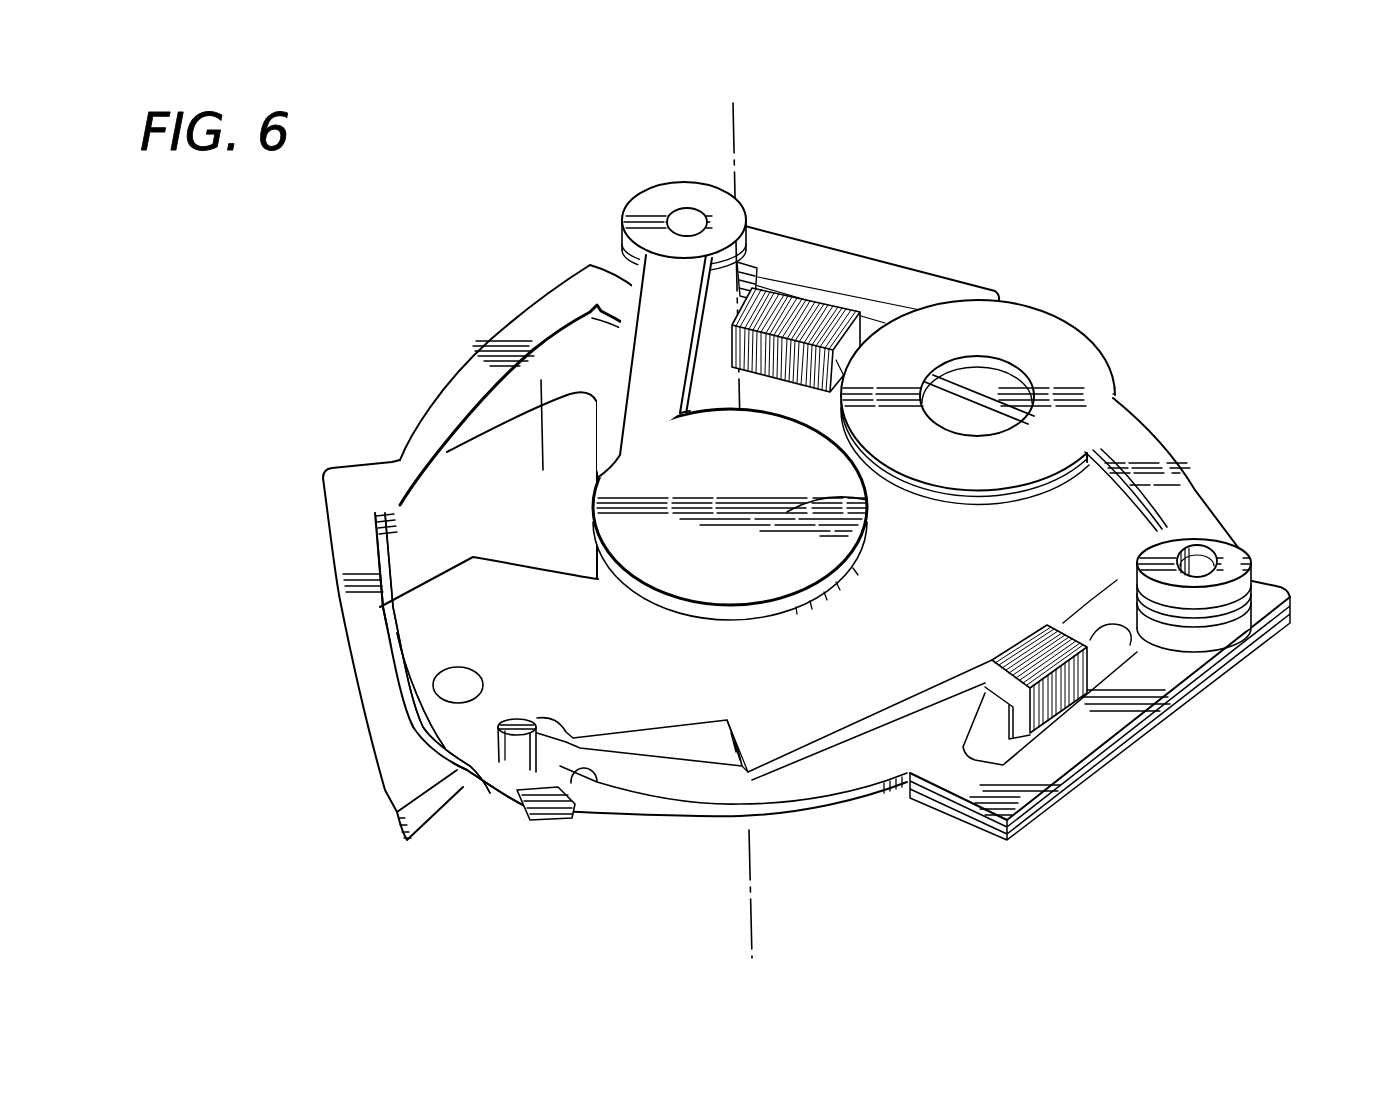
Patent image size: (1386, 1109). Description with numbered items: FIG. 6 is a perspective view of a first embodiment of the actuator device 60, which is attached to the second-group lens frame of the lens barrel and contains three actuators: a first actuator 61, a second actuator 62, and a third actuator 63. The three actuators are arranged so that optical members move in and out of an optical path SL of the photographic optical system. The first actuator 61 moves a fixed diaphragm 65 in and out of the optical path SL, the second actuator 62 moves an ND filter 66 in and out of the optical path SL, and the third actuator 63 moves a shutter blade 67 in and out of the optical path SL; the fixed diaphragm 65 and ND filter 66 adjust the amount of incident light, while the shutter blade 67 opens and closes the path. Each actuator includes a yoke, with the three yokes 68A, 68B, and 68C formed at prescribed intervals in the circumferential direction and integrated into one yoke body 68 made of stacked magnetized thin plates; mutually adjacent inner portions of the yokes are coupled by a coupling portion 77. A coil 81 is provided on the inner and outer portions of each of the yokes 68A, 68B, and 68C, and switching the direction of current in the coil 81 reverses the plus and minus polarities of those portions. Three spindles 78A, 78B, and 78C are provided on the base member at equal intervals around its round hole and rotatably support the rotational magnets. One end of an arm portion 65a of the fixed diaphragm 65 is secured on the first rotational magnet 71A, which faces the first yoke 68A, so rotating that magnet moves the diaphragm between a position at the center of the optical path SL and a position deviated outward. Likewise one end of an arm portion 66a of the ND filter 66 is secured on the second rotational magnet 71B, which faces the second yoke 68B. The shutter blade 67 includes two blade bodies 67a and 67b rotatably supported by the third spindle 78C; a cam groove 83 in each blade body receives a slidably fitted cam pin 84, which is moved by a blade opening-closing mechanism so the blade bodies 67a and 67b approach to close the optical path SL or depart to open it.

The actuator device 60 is at (370, 284).
The first actuator 61 is at (1192, 427).
The second actuator 62 is at (572, 248).
The third actuator 63 is at (508, 822).
The fixed diaphragm 65 is at (1098, 378).
The arm portion of the fixed diaphragm 65a is at (1183, 476).
The ND filter 66 is at (867, 512).
The arm portion of the ND filter 66a is at (630, 222).
The shutter blade 67 is at (508, 460).
The blade body 67a is at (655, 703).
The blade body 67b is at (541, 380).
The yoke body 68 is at (890, 816).
The first yoke 68A is at (1078, 777).
The second yoke 68B is at (938, 277).
The third yoke 68C is at (330, 507).
The first rotational magnet 71A is at (1227, 623).
The second rotational magnet 71B is at (764, 268).
The coupling portion 77 is at (443, 407).
The first spindle 78A is at (1205, 561).
The second spindle 78B is at (683, 218).
The third spindle 78C is at (445, 688).
The coil 81 is at (832, 320).
The cam groove 83 is at (578, 772).
The cam pin 84 is at (513, 750).
The optical path SL is at (738, 128).